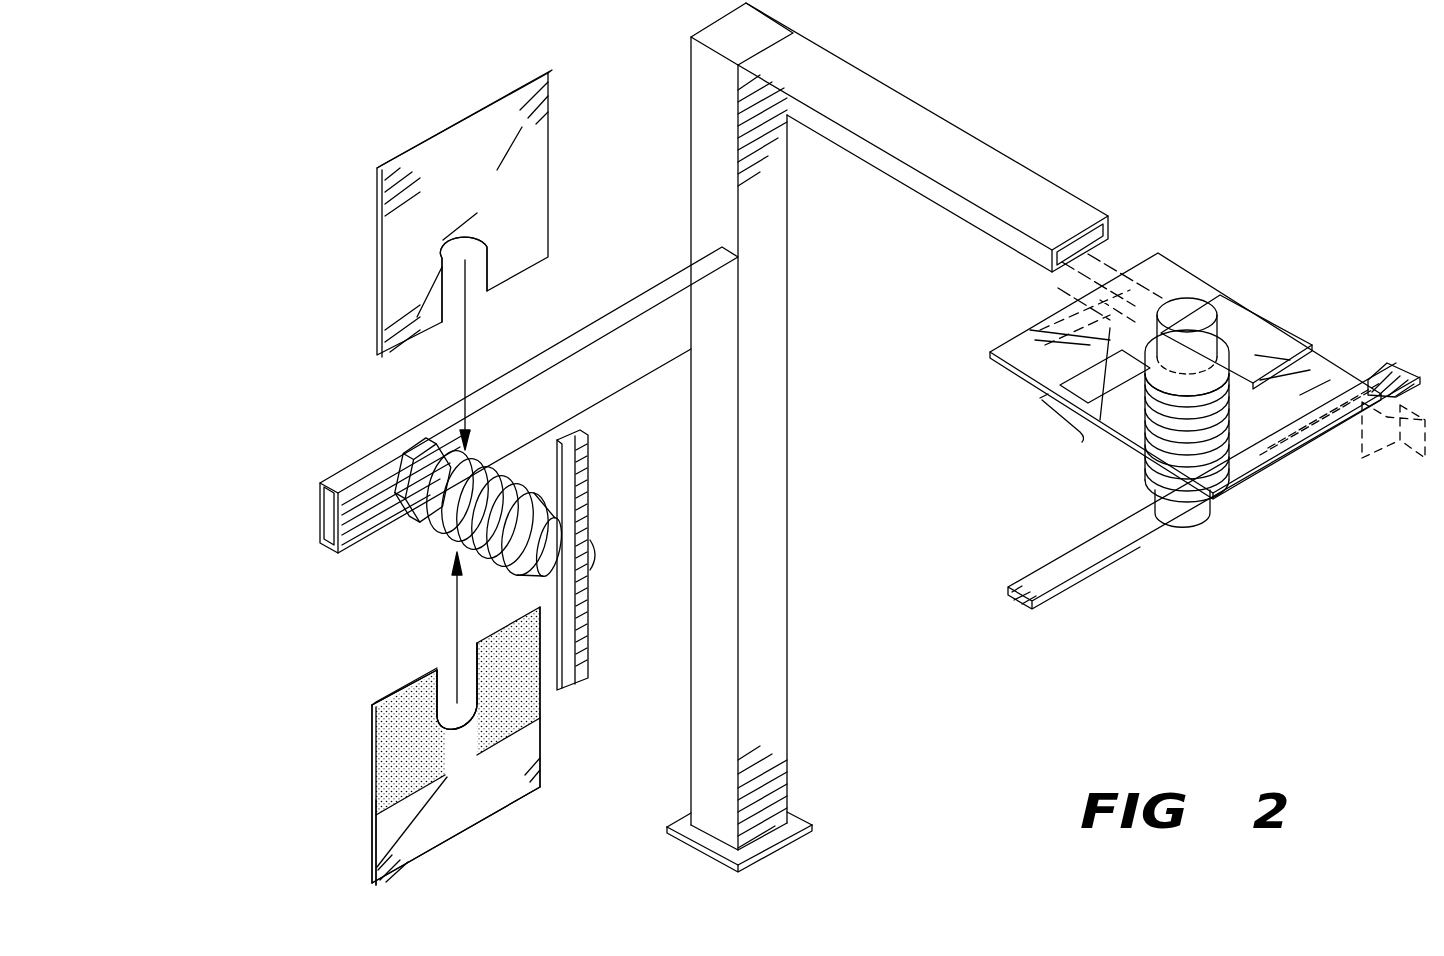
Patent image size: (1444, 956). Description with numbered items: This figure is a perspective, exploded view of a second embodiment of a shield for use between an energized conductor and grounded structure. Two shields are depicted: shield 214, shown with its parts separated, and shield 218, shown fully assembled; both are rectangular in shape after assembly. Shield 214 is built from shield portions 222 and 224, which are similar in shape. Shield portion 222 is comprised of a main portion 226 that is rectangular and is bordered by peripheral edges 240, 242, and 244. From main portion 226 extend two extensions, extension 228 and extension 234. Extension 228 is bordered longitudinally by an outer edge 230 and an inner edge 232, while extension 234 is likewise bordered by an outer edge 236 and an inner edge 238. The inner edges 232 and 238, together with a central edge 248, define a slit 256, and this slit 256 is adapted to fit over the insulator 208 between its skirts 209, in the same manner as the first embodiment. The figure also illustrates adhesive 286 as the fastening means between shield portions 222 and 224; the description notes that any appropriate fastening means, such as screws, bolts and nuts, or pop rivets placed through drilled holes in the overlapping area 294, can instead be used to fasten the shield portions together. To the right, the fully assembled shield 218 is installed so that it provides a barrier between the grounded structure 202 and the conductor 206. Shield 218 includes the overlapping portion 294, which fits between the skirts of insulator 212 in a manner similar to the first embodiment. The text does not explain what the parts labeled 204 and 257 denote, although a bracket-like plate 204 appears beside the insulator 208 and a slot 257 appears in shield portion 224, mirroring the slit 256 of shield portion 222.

The grounded structure 202 is at (691, 65).
The bracket plate 204 is at (583, 586).
The conductor 206 is at (1060, 565).
The insulator 208 is at (554, 493).
The skirts 209 is at (428, 522).
The insulator 212 is at (1192, 302).
The shield 214 is at (228, 566).
The shield 218 is at (1248, 282).
The shield portion 222 is at (540, 800).
The shield portion 224 is at (414, 146).
The main portion 226 is at (414, 834).
The extension 228 is at (528, 660).
The outer edge 230 is at (548, 634).
The inner edge 232 is at (468, 650).
The extension 234 is at (390, 714).
The outer edge 236 is at (372, 720).
The inner edge 238 is at (440, 664).
The peripheral edge 240 is at (548, 744).
The peripheral edge 242 is at (498, 818).
The peripheral edge 244 is at (368, 828).
The central edge 248 is at (448, 752).
The slit 256 is at (450, 670).
The slot 257 is at (474, 298).
The adhesive 286 is at (398, 762).
The overlapping portion 294 is at (1132, 452).